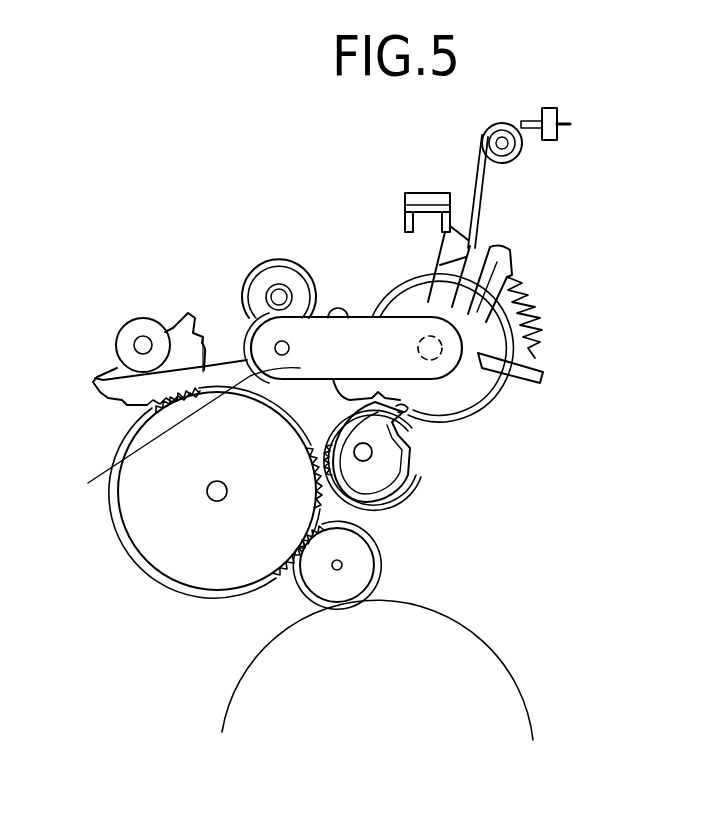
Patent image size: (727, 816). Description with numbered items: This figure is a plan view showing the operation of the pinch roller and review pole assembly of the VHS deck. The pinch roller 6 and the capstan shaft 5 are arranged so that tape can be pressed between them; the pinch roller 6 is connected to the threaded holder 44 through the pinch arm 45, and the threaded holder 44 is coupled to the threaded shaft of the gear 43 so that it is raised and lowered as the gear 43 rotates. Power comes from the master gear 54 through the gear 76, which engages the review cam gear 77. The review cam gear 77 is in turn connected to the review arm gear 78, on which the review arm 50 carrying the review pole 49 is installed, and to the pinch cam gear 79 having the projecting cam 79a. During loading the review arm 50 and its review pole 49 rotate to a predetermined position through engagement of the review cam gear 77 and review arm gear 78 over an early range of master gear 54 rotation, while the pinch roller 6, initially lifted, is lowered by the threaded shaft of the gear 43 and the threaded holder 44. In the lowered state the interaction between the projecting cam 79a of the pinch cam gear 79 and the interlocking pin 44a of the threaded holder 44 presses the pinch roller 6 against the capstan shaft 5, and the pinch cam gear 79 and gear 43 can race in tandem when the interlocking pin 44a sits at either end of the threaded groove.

The capstan shaft 5 is at (278, 293).
The pinch roller 6 is at (178, 440).
The gear 43 is at (408, 277).
The threaded holder 44 is at (455, 400).
The interlocking pin 44a is at (408, 412).
The pinch arm 45 is at (357, 330).
The review pole 49 is at (338, 305).
The review arm 50 is at (210, 333).
The master gear 54 is at (523, 700).
The gear 76 is at (362, 564).
The review cam gear 77 is at (145, 542).
The review arm gear 78 is at (100, 388).
The pinch cam gear 79 is at (397, 500).
The projecting cam 79a is at (410, 473).